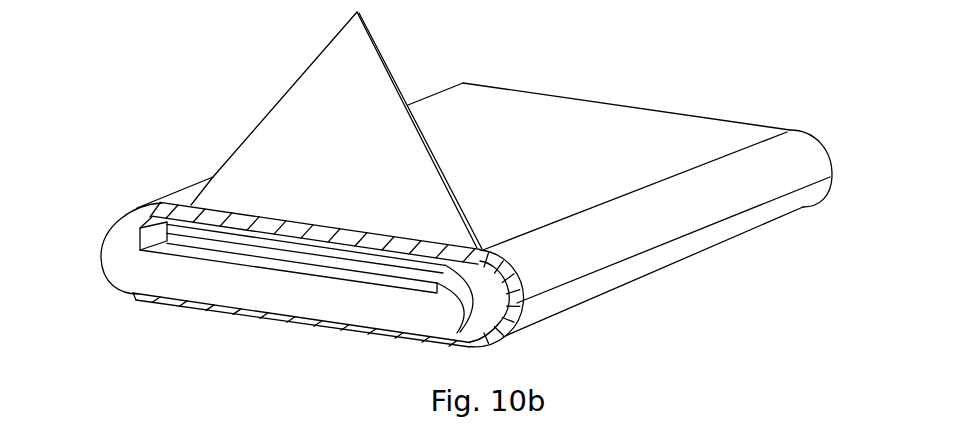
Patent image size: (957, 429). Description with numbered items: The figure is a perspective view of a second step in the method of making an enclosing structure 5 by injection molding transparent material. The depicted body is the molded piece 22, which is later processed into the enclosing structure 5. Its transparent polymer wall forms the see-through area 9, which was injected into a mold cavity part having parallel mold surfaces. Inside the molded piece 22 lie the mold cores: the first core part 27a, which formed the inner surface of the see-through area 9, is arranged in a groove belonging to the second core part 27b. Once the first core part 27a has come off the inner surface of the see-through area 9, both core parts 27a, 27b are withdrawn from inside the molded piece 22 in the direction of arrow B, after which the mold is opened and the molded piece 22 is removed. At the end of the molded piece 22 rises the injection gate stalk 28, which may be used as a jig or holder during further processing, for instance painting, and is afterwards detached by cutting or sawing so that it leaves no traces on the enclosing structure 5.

The enclosing structure 5 is at (137, 207).
The see-through area 9 is at (532, 124).
The molded piece 22 is at (793, 160).
The injection gate stalk 28 is at (303, 120).
The first core part 27a is at (353, 258).
The second core part 27b is at (207, 282).
The arrow B is at (301, 341).